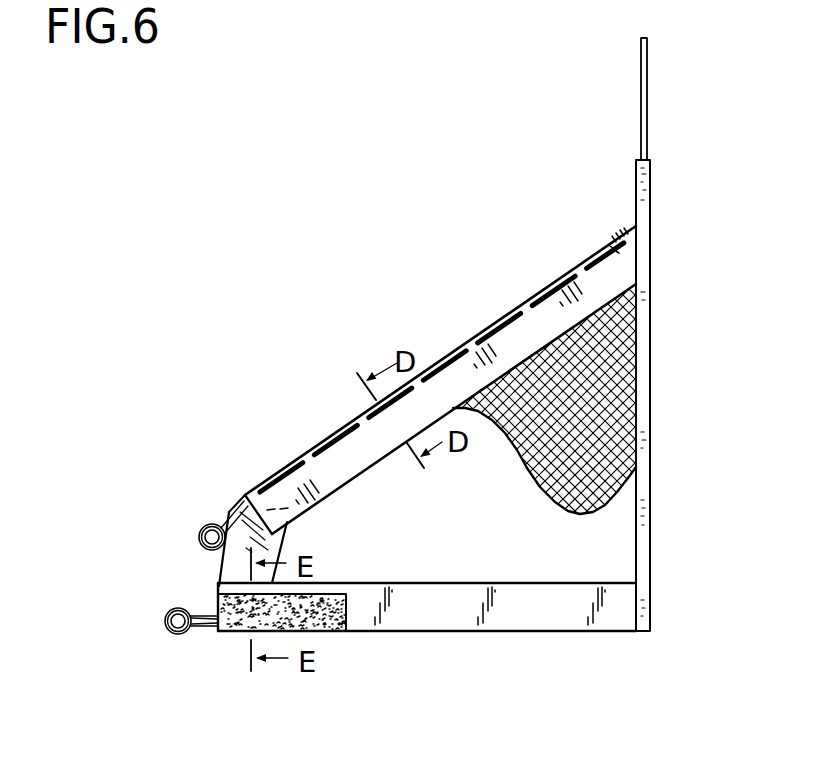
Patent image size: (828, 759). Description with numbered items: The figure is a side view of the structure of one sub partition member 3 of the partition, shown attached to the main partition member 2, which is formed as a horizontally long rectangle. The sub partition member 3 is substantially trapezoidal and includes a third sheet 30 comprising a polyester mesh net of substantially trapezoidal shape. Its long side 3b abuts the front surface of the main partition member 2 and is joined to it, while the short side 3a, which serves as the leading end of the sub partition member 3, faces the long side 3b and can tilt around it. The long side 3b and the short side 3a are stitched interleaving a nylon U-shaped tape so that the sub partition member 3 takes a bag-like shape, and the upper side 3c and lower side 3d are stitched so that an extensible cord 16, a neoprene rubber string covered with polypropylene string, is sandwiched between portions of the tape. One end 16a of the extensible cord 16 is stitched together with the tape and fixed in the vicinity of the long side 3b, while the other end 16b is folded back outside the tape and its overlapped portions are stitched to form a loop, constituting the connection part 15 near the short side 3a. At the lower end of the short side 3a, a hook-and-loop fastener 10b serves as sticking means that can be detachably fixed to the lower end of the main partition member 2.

The main partition member 2 is at (658, 192).
The sub partition member 3 is at (485, 318).
The short side 3a is at (237, 573).
The long side 3b is at (601, 308).
The upper side 3c is at (471, 372).
The lower side 3d is at (578, 612).
The hook-and-loop fastener 10b is at (334, 631).
The connection part 15 is at (205, 507).
The extensible cord 16 is at (238, 507).
The one end of extensible cord 16a is at (620, 243).
The other end of extensible cord 16b is at (200, 542).
The third sheet 30 is at (553, 355).